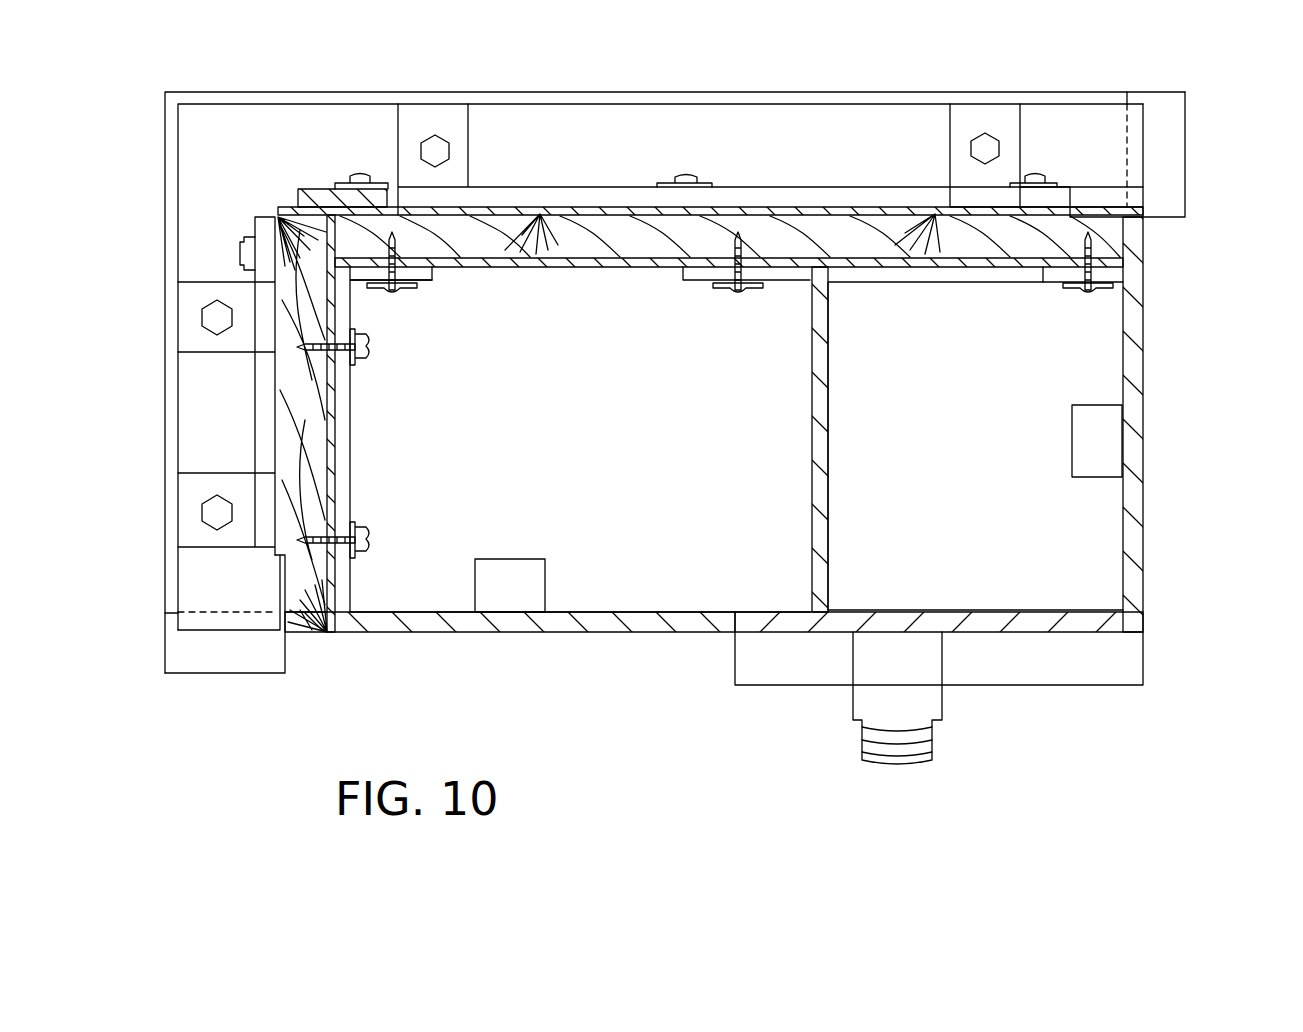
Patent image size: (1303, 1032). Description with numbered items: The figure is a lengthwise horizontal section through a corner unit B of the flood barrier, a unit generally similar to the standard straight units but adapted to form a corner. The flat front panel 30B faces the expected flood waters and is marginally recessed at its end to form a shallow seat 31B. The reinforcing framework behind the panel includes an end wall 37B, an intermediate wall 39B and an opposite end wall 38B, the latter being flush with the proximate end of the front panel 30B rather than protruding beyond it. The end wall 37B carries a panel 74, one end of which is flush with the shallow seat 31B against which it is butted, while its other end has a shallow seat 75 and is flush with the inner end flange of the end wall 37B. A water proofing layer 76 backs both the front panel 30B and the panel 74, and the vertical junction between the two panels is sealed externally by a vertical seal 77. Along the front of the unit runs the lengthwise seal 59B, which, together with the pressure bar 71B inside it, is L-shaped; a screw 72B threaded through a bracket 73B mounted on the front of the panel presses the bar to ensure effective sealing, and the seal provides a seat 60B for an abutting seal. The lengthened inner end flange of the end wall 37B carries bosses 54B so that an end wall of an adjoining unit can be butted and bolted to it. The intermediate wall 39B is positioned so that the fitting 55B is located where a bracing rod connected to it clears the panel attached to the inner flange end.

The pressure bar 71B is at (225, 125).
The lengthwise seal 59B is at (680, 104).
The bracket 73B is at (968, 118).
The screw 72B is at (990, 150).
The seat 60B is at (1167, 134).
The front panel 30B is at (500, 225).
The vertical seal 77 is at (290, 207).
The water proofing layer 76 is at (540, 268).
The shallow seat 31B is at (405, 292).
The end wall 37B is at (345, 465).
The intermediate wall 39B is at (818, 415).
The end wall 38B is at (1135, 483).
The panel 74 is at (312, 500).
The boss 54B is at (525, 578).
The shallow seat 75 is at (312, 632).
The fitting 55B is at (930, 700).
The unit B is at (648, 665).